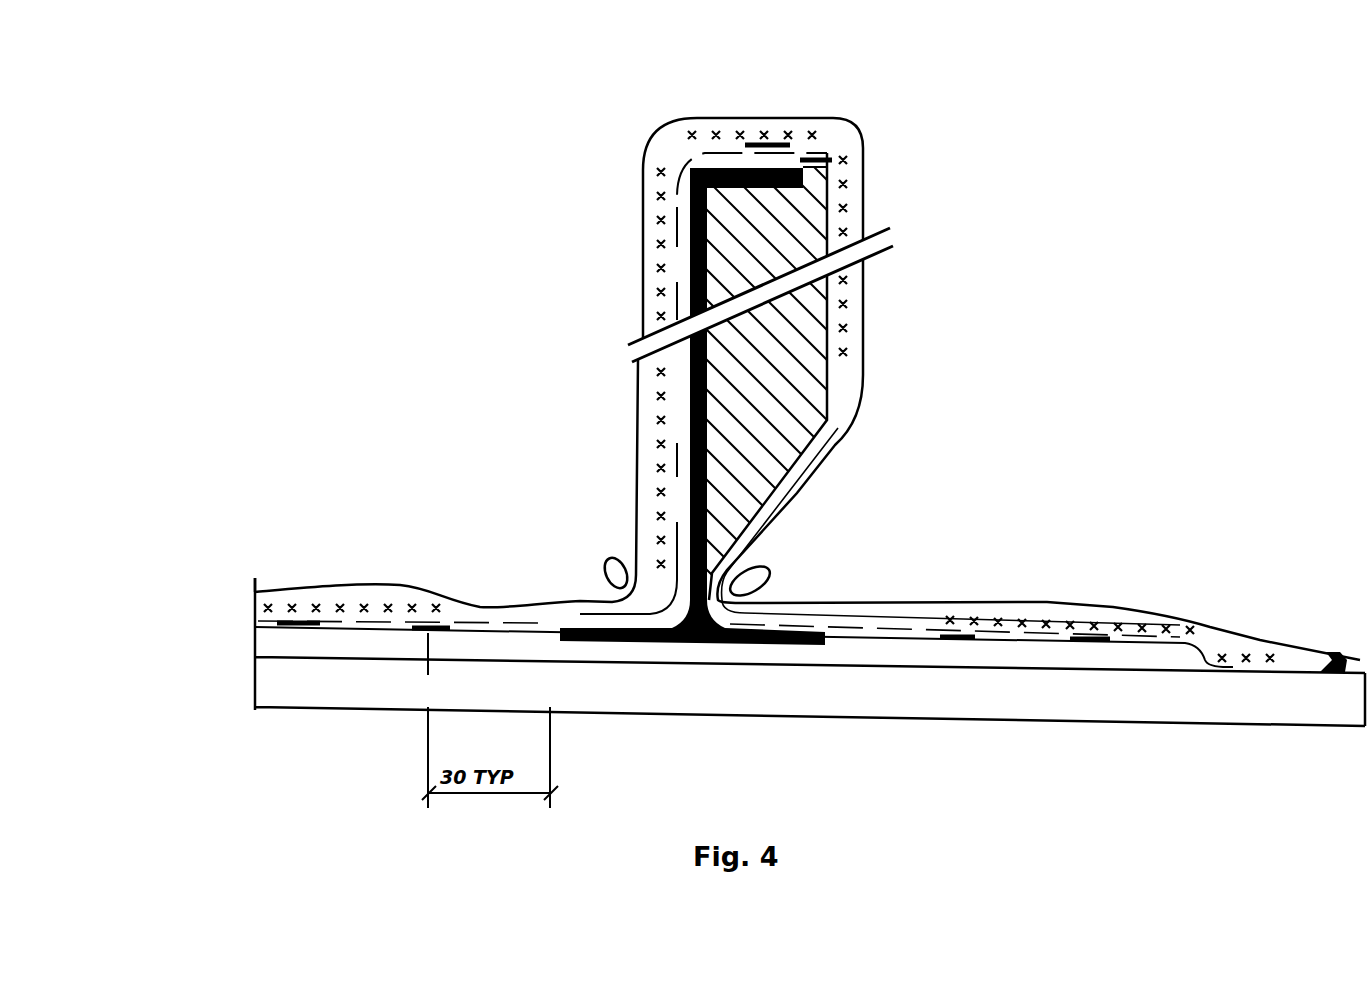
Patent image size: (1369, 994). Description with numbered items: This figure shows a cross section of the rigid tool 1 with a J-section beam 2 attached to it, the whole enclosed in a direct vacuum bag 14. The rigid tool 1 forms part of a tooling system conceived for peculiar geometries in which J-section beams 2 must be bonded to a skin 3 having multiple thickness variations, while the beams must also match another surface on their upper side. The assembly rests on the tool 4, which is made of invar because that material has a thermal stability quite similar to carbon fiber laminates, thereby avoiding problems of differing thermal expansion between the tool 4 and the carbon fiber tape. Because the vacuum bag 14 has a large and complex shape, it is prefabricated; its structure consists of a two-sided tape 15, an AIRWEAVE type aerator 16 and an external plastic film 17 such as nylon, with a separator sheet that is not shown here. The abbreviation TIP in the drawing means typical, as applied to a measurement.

The rigid tool 1 is at (765, 395).
The J-section beam 2 is at (690, 474).
The skin 3 is at (277, 643).
The tool 4 is at (317, 690).
The vacuum bag 14 is at (884, 185).
The two-sided tape 15 is at (762, 147).
The aerator 16 is at (658, 268).
The external plastic film 17 is at (635, 438).